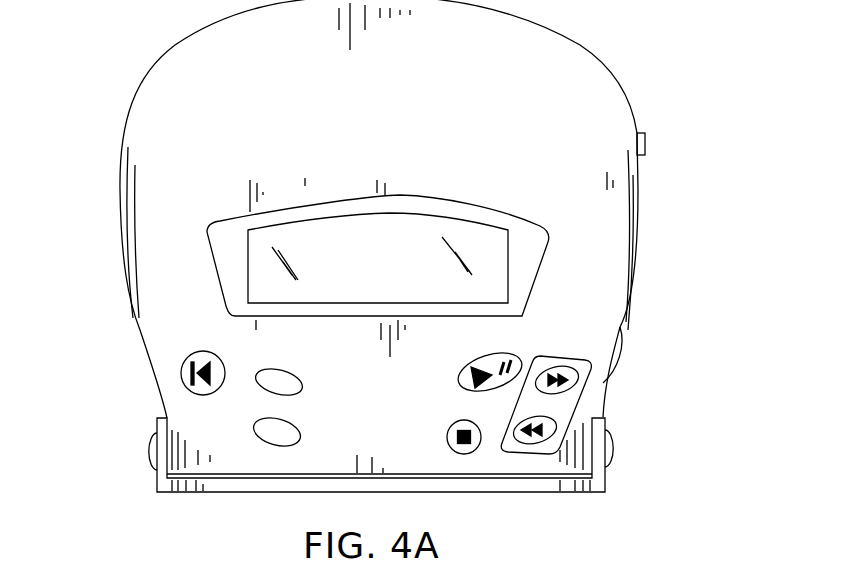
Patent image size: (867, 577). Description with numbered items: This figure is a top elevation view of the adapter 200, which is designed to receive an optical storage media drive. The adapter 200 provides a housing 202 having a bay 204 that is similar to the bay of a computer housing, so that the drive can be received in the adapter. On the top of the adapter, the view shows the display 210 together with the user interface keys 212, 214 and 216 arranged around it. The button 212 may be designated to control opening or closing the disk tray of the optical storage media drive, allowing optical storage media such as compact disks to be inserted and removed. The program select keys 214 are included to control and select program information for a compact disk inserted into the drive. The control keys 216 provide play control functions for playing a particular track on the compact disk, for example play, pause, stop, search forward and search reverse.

The adapter 200 is at (669, 116).
The housing 202 is at (160, 132).
The bay 204 is at (542, 493).
The display 210 is at (488, 265).
The button 212 is at (183, 372).
The program select keys 214 is at (248, 401).
The control keys 216 is at (563, 402).